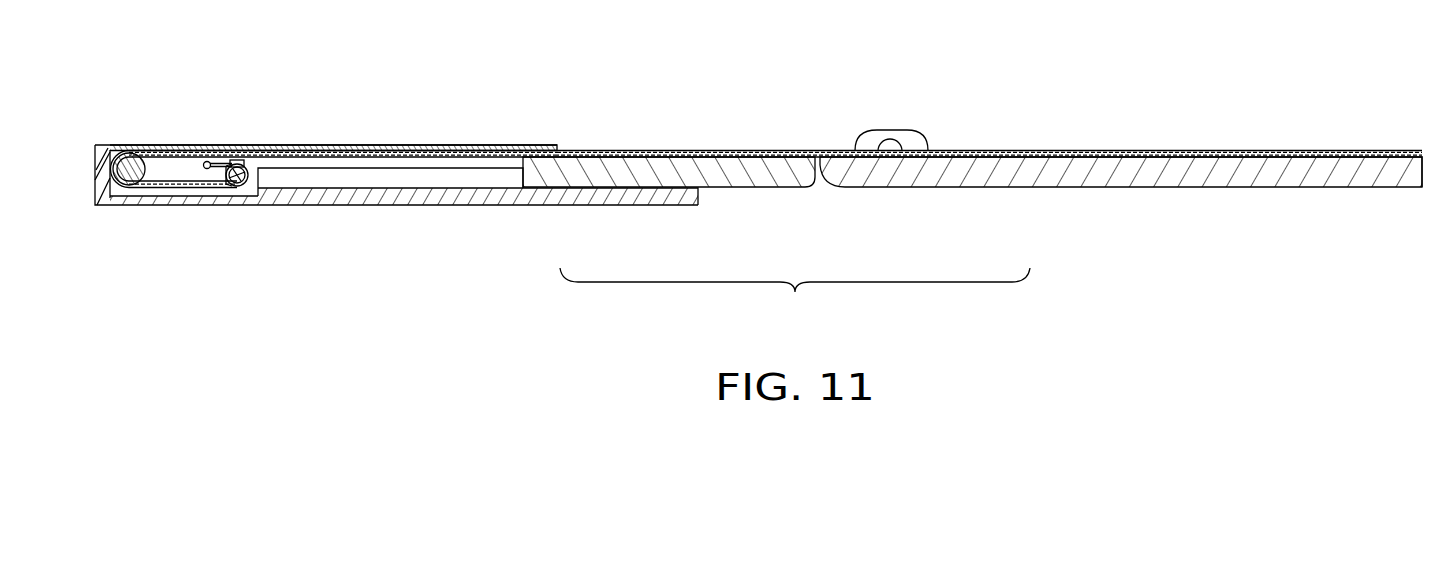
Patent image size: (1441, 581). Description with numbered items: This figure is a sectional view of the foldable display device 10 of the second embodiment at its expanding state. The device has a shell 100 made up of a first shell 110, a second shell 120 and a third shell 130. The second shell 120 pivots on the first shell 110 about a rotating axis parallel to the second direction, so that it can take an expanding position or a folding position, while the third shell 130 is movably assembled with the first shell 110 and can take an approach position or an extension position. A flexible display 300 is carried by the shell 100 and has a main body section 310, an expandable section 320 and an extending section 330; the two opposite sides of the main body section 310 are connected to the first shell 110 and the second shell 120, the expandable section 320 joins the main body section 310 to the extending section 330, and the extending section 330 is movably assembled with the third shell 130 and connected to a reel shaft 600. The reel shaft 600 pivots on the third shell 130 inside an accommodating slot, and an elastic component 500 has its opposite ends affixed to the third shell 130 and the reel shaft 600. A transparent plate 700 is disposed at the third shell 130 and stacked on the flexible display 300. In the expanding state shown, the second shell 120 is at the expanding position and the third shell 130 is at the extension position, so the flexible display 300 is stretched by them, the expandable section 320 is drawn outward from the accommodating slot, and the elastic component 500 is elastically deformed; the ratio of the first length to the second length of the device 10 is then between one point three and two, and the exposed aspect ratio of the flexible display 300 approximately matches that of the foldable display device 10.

The foldable display device 10 is at (1248, 31).
The shell 100 is at (795, 293).
The first shell 110 is at (735, 172).
The second shell 120 is at (1008, 172).
The third shell 130 is at (488, 202).
The flexible display 300 is at (1282, 151).
The main body section 310 is at (1053, 150).
The expandable section 320 is at (316, 158).
The extending section 330 is at (166, 186).
The elastic component 500 is at (220, 162).
The reel shaft 600 is at (236, 187).
The transparent plate 700 is at (458, 147).